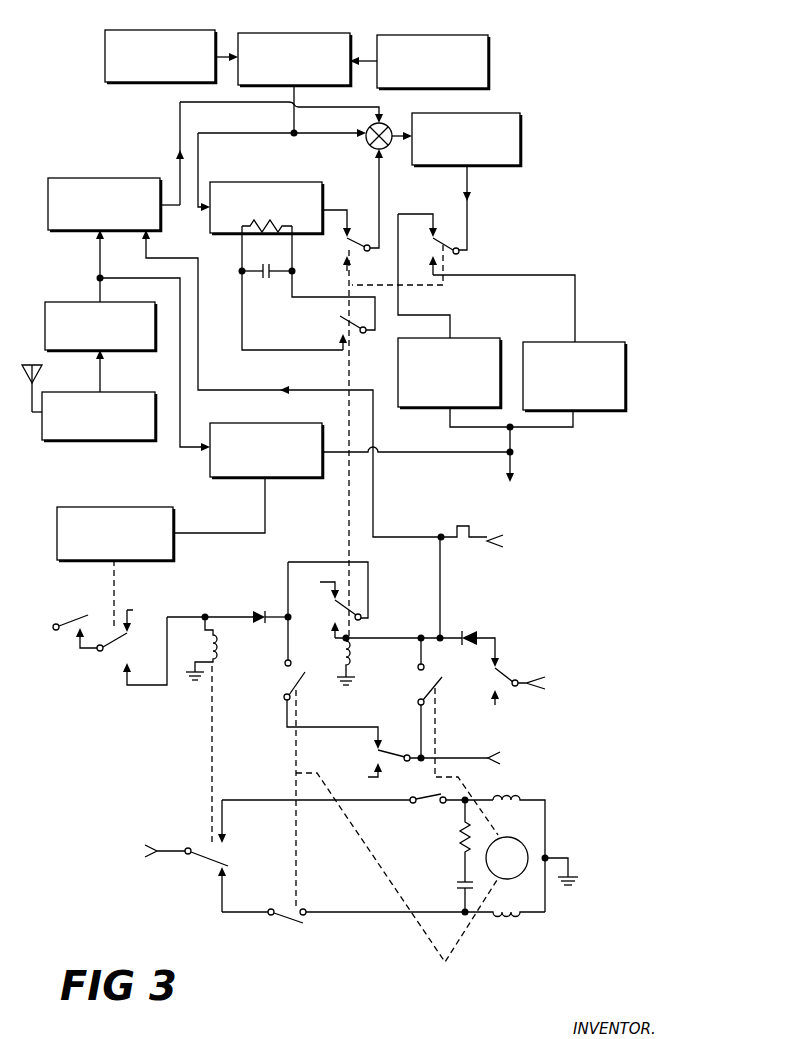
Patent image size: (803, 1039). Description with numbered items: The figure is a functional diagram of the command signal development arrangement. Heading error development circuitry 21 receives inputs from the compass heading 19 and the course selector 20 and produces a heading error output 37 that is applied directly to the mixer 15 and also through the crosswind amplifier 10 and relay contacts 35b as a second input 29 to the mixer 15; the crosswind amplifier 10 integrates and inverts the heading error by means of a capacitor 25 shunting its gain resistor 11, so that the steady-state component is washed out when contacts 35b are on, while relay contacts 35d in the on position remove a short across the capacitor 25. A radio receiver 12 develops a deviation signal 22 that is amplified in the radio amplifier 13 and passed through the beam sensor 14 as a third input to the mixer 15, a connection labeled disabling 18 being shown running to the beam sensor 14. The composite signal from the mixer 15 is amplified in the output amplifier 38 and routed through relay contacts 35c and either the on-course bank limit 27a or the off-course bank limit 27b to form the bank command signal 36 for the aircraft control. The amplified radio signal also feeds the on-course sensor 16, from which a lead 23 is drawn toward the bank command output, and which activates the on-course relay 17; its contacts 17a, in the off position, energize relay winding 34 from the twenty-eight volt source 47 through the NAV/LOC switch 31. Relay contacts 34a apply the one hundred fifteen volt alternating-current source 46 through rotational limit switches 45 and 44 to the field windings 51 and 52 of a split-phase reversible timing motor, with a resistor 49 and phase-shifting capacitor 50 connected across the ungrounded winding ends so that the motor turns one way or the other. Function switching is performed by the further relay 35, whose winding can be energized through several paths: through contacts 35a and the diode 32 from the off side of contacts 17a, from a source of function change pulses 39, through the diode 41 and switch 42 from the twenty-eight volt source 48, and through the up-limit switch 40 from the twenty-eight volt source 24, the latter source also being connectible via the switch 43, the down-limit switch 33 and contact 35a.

The crosswind amplifier 10 is at (304, 181).
The gain resistor 11 is at (262, 233).
The radio receiver 12 is at (82, 390).
The radio amplifier 13 is at (57, 300).
The beam sensor 14 is at (116, 178).
The mixer 15 is at (389, 124).
The on-course sensor 16 is at (251, 422).
The on-course relay 17 is at (133, 508).
The on-course relay contacts 17a is at (118, 653).
The disabling lead 18 is at (201, 265).
The compass heading 19 is at (180, 31).
The course selector 20 is at (438, 37).
The heading error development circuitry 21 is at (306, 34).
The output signal 22 is at (105, 368).
The lead 23 is at (427, 450).
The source of 28 volts D.C. 24 is at (453, 757).
The integrating capacitor 25 is at (259, 280).
The on-course bank limit 27a is at (470, 335).
The off-course bank limit 27b is at (593, 338).
The second mixer input 29 is at (380, 178).
The NAV/LOC switch 31 is at (71, 614).
The diode 32 is at (253, 616).
The down-limit switch 33 is at (286, 679).
The relay winding 34 is at (216, 660).
The relay contacts 34a is at (223, 855).
The relay 35 is at (350, 665).
The relay contacts 35a is at (352, 622).
The relay contacts 35b is at (354, 255).
The relay contacts 35c is at (447, 255).
The relay contacts 35d is at (362, 345).
The bank command signal 36 is at (508, 465).
The heading error output 37 is at (292, 120).
The output amplifier 38 is at (495, 113).
The source of function change pulses 39 is at (478, 543).
The up-limit switch 40 is at (443, 688).
The diode 41 is at (466, 647).
The switch 42 is at (490, 677).
The switch 43 is at (393, 748).
The rotational limit switch 44 is at (297, 907).
The rotational limit switch 45 is at (425, 796).
The 115 volt A.C. energizing source 46 is at (172, 849).
The 28 volt energizing source 47 is at (53, 622).
The source of 28 volts D.C. 48 is at (525, 680).
The resistor 49 is at (462, 840).
The phase shifting capacitor 50 is at (462, 880).
The field winding 51 is at (513, 801).
The field winding 52 is at (503, 918).